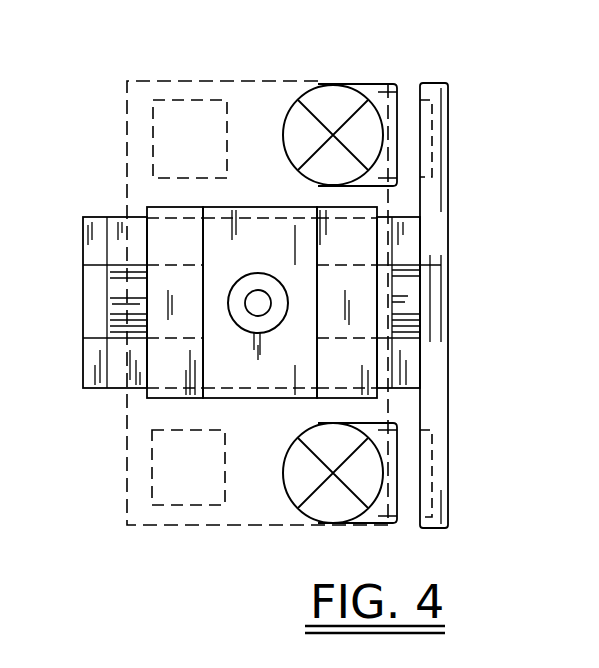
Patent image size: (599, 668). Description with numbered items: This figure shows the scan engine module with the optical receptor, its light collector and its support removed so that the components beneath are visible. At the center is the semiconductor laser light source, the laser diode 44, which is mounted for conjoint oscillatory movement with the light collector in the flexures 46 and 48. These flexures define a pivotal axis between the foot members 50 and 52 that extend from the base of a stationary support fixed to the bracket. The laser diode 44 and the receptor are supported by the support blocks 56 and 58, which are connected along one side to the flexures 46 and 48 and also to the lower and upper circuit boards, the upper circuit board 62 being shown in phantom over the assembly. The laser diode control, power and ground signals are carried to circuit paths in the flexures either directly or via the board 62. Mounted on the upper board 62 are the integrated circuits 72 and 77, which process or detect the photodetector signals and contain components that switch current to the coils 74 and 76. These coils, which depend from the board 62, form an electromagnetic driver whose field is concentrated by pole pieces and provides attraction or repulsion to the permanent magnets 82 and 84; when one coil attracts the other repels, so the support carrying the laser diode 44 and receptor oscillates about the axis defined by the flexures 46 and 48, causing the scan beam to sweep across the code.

The laser diode 44 is at (251, 274).
The flexure 46 is at (116, 288).
The flexure 48 is at (405, 297).
The foot member 50 is at (85, 330).
The foot member 52 is at (448, 378).
The support block 56 is at (190, 254).
The support block 58 is at (361, 254).
The upper circuit board 62 is at (153, 80).
The integrated circuit 72 is at (163, 133).
The coil 74 is at (333, 103).
The coil 76 is at (331, 505).
The integrated circuit 77 is at (165, 465).
The permanent magnet 82 is at (431, 153).
The permanent magnet 84 is at (425, 473).